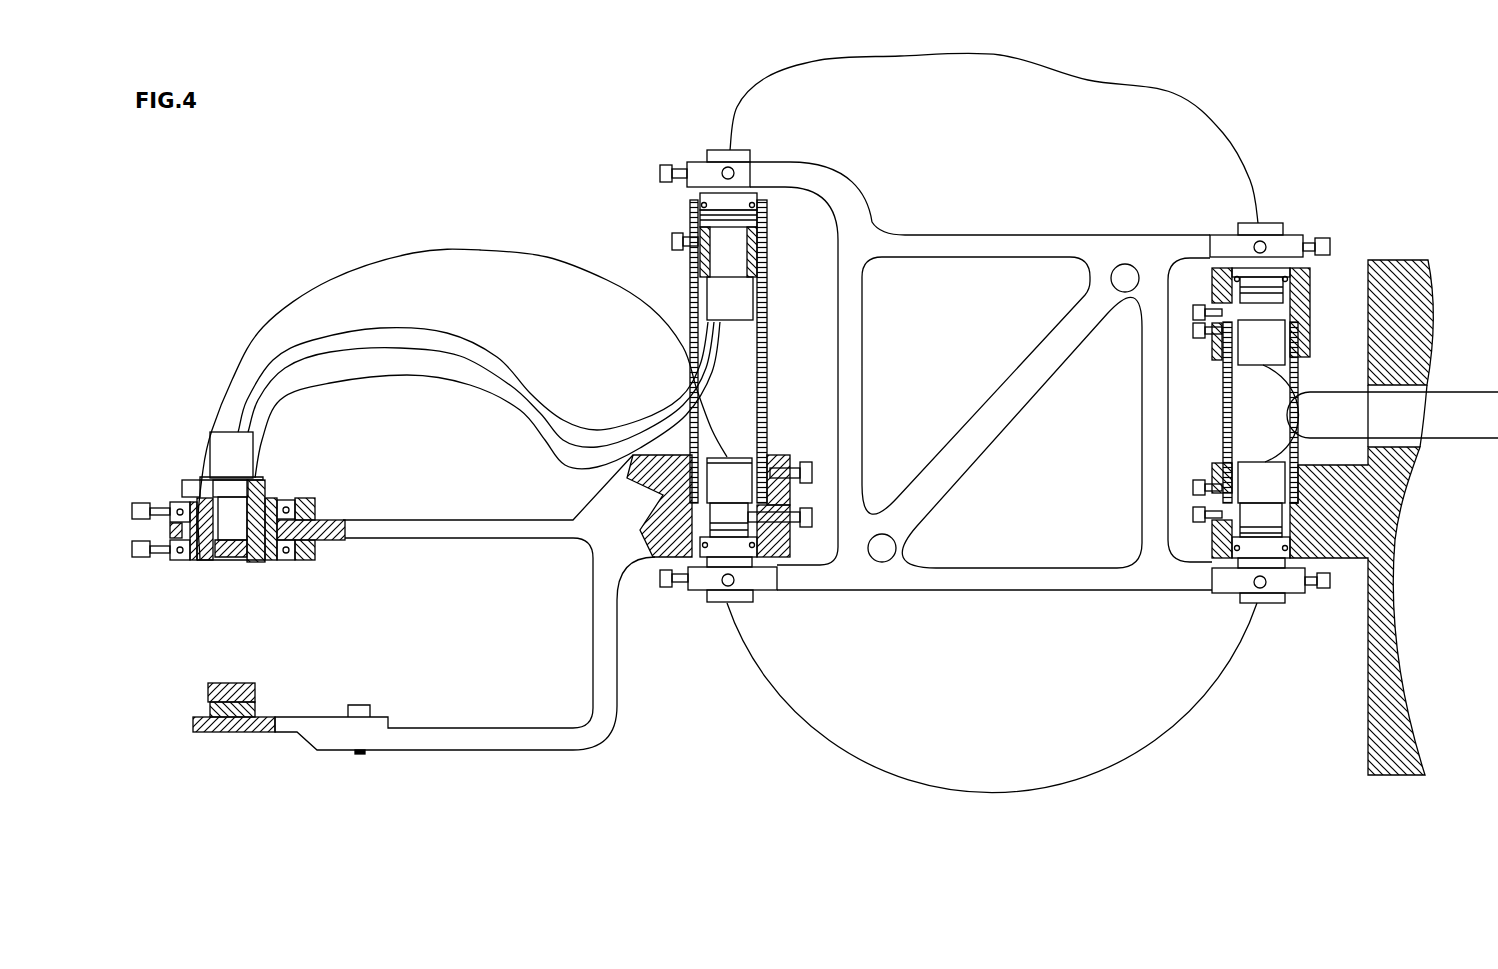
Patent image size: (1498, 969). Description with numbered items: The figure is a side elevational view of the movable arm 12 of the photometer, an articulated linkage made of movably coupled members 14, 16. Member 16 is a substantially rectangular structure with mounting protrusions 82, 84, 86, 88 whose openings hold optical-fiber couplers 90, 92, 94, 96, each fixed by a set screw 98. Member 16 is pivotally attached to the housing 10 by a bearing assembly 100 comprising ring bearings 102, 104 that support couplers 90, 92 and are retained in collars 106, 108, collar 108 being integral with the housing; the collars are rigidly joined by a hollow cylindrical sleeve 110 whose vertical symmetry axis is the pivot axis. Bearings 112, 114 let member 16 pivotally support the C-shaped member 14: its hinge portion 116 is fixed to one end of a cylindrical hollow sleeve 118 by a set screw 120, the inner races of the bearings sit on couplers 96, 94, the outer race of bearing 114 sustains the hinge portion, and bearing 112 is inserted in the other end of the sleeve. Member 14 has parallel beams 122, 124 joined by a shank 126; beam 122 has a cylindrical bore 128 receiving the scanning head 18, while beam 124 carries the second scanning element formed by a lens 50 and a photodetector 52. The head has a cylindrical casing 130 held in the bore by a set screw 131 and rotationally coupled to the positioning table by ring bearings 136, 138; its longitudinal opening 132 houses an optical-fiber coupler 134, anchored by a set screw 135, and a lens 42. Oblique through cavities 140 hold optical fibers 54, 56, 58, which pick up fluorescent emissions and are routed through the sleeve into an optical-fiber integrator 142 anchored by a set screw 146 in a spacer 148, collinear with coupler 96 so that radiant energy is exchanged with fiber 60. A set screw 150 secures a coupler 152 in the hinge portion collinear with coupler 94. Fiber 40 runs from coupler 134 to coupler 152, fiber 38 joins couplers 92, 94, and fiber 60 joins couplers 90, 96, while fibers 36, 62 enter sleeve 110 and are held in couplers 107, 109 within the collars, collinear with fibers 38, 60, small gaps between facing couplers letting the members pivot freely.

The housing 10 is at (1405, 262).
The movable arm 12 is at (486, 140).
The C-shaped member 14 is at (398, 768).
The member 16 is at (1012, 602).
The scanning head 18 is at (224, 580).
The optical fiber 36 is at (1448, 390).
The optical fiber 38 is at (992, 790).
The optical fiber 40 is at (470, 246).
The lens 42 is at (237, 557).
The lens 50 is at (232, 685).
The photodetector 52 is at (258, 705).
The optical fiber 54 is at (382, 327).
The optical fiber 56 is at (412, 348).
The optical fiber 58 is at (415, 379).
The optical fiber 60 is at (893, 60).
The optical fiber 62 is at (1450, 440).
The mounting protrusion 82 is at (1297, 235).
The mounting protrusion 84 is at (1290, 595).
The mounting protrusion 86 is at (697, 588).
The mounting protrusion 88 is at (697, 162).
The optical-fiber coupler 90 is at (1267, 223).
The optical-fiber coupler 92 is at (1250, 605).
The optical-fiber coupler 94 is at (717, 604).
The optical-fiber coupler 96 is at (745, 150).
The set screw 98 is at (663, 165).
The bearing assembly 100 is at (1310, 370).
The ring bearing 102 is at (1230, 275).
The ring bearing 104 is at (1238, 553).
The collar 106 is at (1305, 312).
The optical-fiber coupler 107 is at (1248, 347).
The collar 108 is at (1212, 540).
The optical-fiber coupler 109 is at (1248, 475).
The hollow cylindrical sleeve 110 is at (1222, 413).
The bearing 112 is at (690, 200).
The bearing 114 is at (752, 552).
The hinge portion 116 is at (592, 515).
The cylindrical hollow sleeve 118 is at (768, 378).
The set screw 120 is at (312, 552).
The beam 122 is at (435, 520).
The beam 124 is at (462, 728).
The shank 126 is at (590, 642).
The cylindrical bore 128 is at (272, 560).
The casing 130 is at (268, 505).
The set screw 131 is at (168, 522).
The longitudinal opening 132 is at (257, 490).
The optical-fiber coupler 134 is at (213, 440).
The set screw 135 is at (185, 482).
The ring bearing 136 is at (300, 502).
The ring bearing 138 is at (292, 555).
The through cavity 140 is at (197, 552).
The optical-fiber integrator 142 is at (745, 310).
The set screw 146 is at (670, 240).
The spacer 148 is at (690, 258).
The set screw 150 is at (805, 527).
The optical-fiber coupler 152 is at (740, 460).